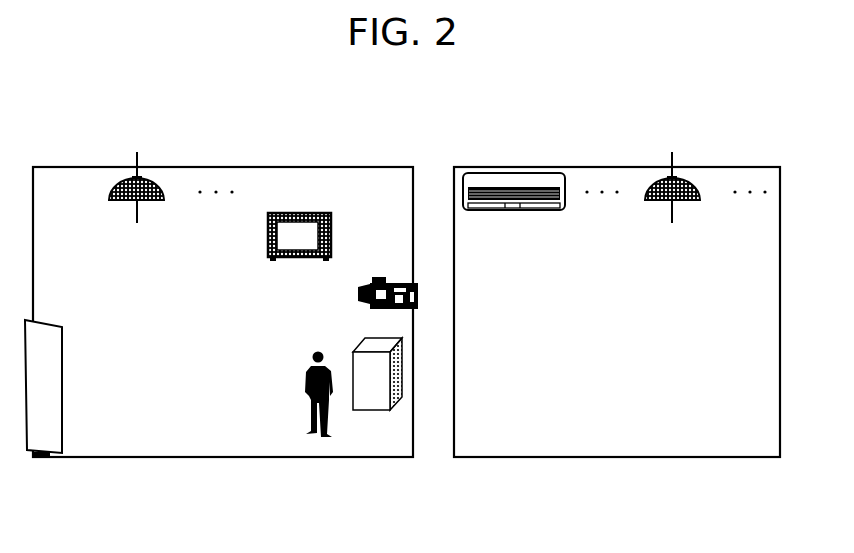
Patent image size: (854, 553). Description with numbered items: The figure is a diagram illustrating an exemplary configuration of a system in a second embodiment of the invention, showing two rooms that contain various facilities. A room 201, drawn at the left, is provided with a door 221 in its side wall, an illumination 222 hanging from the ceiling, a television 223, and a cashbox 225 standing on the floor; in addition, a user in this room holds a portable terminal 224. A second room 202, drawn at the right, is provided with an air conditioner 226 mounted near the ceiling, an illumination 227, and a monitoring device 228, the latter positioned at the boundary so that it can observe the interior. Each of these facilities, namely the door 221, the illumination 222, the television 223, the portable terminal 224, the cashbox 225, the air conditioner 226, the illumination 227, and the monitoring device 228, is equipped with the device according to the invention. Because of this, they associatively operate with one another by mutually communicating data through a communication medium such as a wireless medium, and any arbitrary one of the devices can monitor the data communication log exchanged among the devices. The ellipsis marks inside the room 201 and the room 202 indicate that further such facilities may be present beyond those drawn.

The room 201 is at (193, 458).
The room 202 is at (480, 458).
The door 221 is at (45, 458).
The illumination 222 is at (146, 178).
The television 223 is at (310, 213).
The portable terminal 224 is at (328, 434).
The cashbox 225 is at (378, 411).
The air conditioner 226 is at (512, 182).
The illumination 227 is at (680, 180).
The monitoring device 228 is at (395, 282).